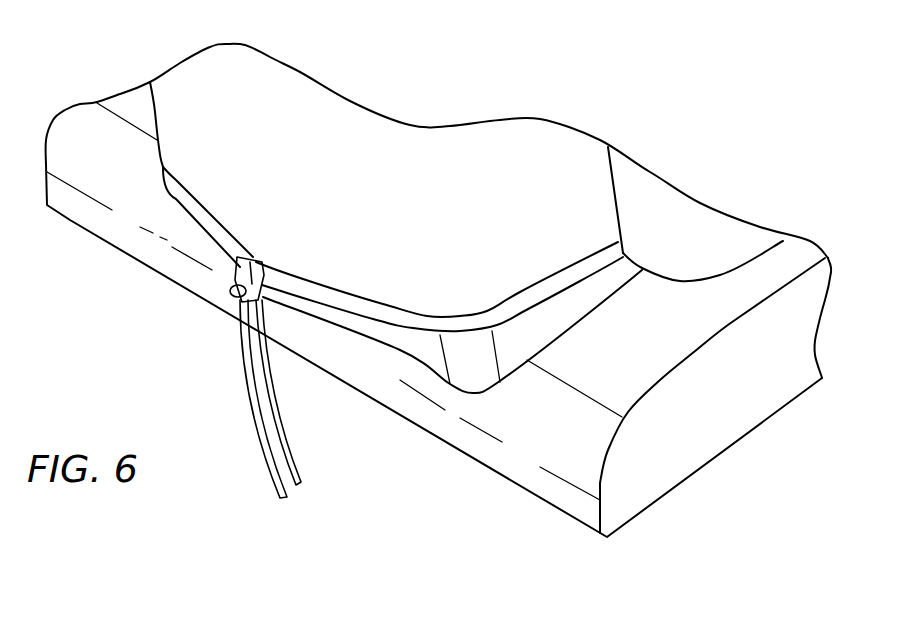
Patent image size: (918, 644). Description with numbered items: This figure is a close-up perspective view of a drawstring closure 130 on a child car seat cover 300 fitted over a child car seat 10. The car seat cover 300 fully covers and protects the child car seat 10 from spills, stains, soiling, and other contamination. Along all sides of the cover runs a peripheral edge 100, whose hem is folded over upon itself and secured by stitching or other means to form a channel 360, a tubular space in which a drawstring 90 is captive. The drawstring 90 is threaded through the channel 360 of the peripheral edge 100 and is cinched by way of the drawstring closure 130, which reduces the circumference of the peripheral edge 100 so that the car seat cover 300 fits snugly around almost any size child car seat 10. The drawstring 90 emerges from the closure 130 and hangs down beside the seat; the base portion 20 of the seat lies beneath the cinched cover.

The child car seat 10 is at (530, 342).
The base 20 is at (663, 443).
The drawstring 90 is at (245, 372).
The peripheral edge 100 is at (197, 222).
The drawstring closure 130 is at (233, 281).
The child car seat cover 300 is at (533, 170).
The channel 360 is at (351, 298).